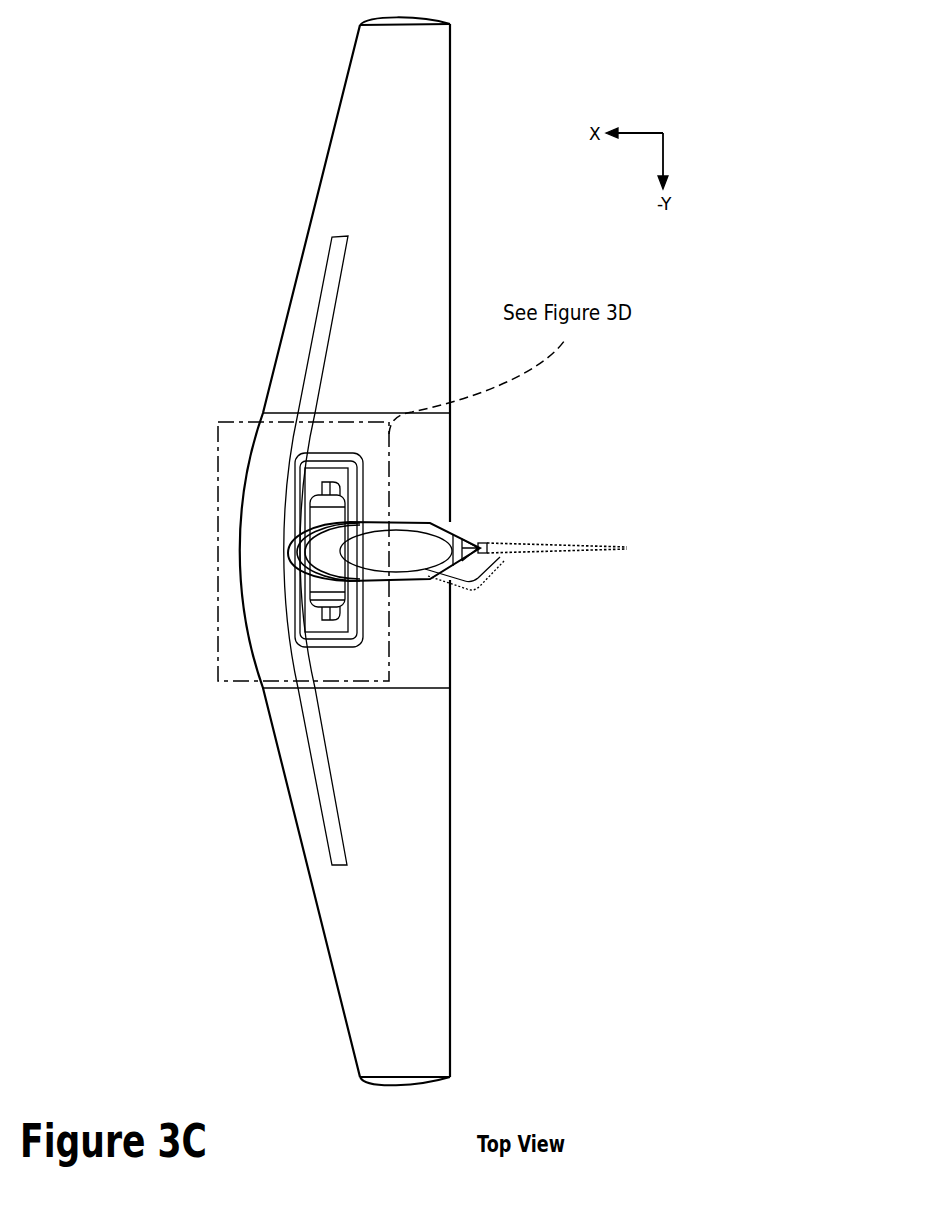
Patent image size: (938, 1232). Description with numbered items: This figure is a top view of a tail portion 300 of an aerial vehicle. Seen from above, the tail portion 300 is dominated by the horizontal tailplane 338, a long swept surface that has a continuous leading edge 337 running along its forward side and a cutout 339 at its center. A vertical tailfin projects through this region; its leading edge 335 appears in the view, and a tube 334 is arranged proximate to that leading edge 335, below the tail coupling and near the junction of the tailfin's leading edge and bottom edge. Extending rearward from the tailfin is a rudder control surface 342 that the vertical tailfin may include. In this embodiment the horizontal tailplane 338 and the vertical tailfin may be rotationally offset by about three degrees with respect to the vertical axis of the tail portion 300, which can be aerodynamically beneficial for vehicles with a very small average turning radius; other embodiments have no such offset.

The tail portion 300 is at (240, 178).
The tube 334 is at (308, 583).
The leading edge 335 is at (293, 557).
The continuous leading edge 337 is at (318, 920).
The horizontal tailplane 338 is at (450, 877).
The cutout 339 is at (435, 580).
The rudder control surface 342 is at (547, 542).